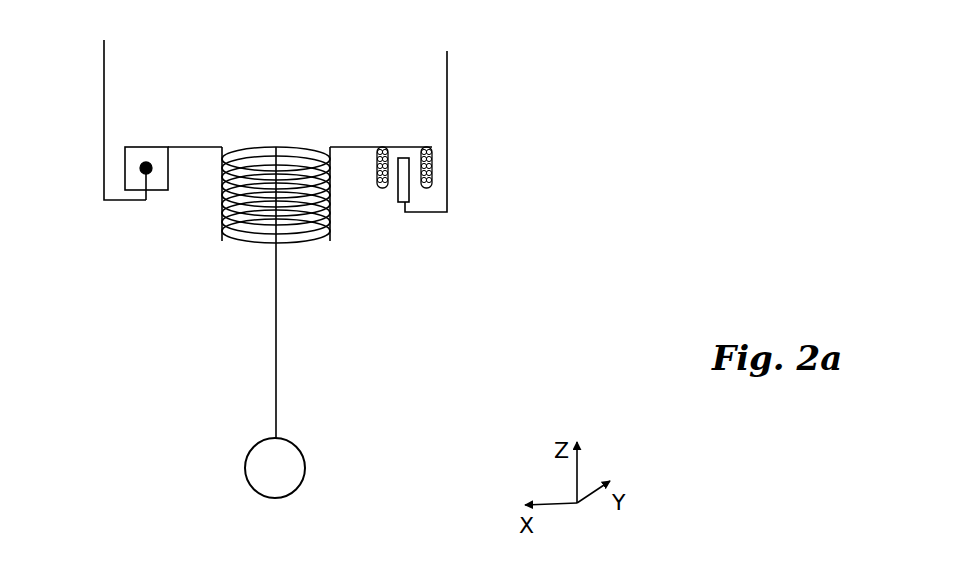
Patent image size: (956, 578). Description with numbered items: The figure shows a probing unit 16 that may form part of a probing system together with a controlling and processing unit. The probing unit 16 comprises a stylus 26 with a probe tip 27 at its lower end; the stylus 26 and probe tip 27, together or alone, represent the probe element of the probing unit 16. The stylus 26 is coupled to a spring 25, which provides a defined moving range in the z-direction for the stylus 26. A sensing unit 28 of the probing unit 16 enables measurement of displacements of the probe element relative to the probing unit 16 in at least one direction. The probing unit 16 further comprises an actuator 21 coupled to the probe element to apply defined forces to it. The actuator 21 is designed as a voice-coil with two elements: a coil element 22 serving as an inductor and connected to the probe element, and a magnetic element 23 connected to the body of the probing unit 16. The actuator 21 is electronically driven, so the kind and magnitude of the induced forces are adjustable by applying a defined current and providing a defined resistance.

The probing unit 16 is at (551, 72).
The actuator 21 is at (440, 201).
The coil element 22 is at (459, 210).
The magnetic element 23 is at (448, 236).
The spring 25 is at (242, 210).
The stylus 26 is at (232, 292).
The probe tip 27 is at (318, 468).
The sensing unit 28 is at (172, 143).